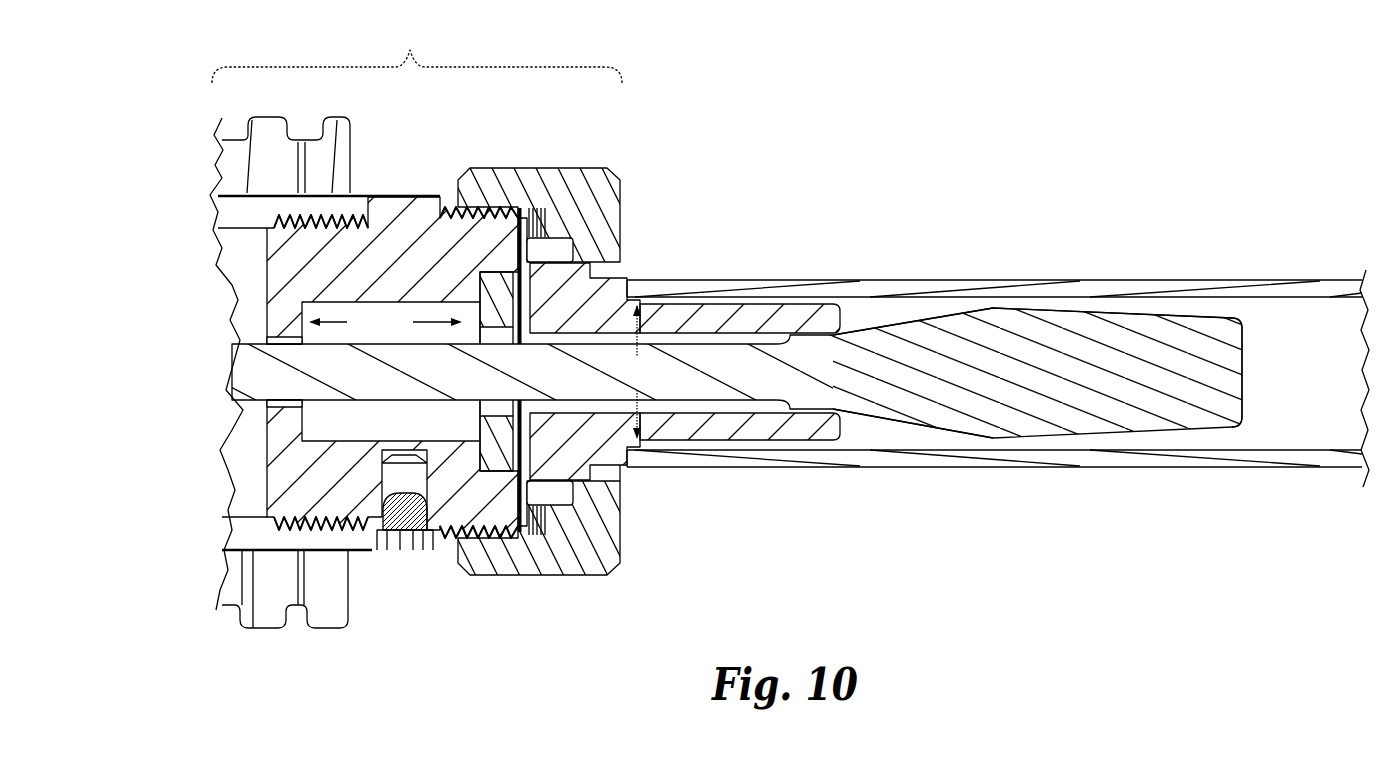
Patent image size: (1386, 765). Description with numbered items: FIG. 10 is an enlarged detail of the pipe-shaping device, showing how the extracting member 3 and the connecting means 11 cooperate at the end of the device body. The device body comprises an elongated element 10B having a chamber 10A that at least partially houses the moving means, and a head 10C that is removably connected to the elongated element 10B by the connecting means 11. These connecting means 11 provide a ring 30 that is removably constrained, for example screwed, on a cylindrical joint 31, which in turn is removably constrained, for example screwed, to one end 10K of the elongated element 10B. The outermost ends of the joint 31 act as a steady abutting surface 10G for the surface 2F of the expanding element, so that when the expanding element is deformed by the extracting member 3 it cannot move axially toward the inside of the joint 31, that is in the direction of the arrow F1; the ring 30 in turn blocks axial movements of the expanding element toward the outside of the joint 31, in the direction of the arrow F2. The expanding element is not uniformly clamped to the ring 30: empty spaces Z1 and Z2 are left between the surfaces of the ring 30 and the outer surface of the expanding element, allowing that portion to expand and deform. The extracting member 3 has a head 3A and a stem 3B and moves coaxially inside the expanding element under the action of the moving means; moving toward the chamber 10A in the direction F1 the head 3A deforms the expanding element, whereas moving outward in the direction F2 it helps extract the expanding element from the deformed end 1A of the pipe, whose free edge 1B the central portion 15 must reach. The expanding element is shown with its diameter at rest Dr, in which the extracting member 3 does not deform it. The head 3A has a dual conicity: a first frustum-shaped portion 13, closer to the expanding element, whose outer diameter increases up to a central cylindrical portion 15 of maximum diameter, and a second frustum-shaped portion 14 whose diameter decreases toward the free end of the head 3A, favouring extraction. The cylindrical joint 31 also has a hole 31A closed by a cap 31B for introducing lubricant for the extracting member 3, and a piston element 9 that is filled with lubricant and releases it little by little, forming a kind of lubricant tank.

The head 10C is at (417, 44).
The elongated element 10B is at (214, 155).
The chamber 10A is at (250, 281).
The connecting means 11 is at (502, 160).
The ring 30 is at (587, 178).
The abutting surface 10G is at (523, 251).
The surface of the expanding element 2F is at (505, 293).
The free edge 1B is at (633, 296).
The pipe end 1A is at (736, 270).
The first frustum-shaped portion 13 is at (878, 318).
The central cylindrical portion 15 is at (1012, 300).
The head 3A is at (1057, 343).
The second frustum-shaped portion 14 is at (1190, 310).
The arrow F1 is at (342, 326).
The arrow F2 is at (426, 326).
The diameter at rest Dr is at (670, 372).
The hole 31A is at (405, 482).
The cap 31B is at (408, 522).
The end of the elongated element 10K is at (319, 545).
The cylindrical joint 31 is at (447, 548).
The piston element 9 is at (500, 452).
The empty space Z2 is at (552, 497).
The stem 3B is at (590, 372).
The empty space Z1 is at (620, 475).
The extracting member 3 is at (1000, 380).